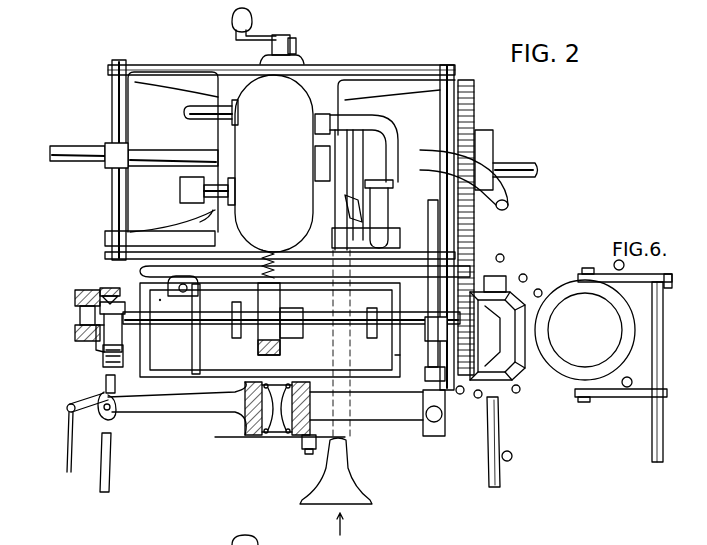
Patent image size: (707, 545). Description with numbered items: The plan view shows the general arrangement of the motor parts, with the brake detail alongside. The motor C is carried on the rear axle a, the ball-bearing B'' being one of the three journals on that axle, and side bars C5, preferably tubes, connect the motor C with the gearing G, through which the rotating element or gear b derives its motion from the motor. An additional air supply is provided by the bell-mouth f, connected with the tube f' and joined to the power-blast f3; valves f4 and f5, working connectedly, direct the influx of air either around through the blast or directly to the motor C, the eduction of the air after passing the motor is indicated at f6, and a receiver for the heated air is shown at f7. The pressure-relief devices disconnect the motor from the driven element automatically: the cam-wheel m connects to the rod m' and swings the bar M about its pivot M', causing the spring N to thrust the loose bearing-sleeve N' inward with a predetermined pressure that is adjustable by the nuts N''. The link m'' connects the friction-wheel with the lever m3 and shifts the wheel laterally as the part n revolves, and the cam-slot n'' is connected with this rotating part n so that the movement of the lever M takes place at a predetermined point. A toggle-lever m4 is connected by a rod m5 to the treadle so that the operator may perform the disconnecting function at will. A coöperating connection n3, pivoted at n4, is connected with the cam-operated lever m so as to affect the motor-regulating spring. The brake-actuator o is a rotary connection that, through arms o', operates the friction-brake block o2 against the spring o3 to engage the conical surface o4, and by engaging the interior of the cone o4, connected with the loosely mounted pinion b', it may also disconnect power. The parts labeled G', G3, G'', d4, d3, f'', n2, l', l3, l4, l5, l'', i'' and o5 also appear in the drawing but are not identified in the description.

In FIG. 2, the handle knob G' is at (254, 24).
In FIG. 2, the handle bracket G3 is at (273, 49).
In FIG. 2, the handle pivot G'' is at (305, 46).
In FIG. 2, the side bars C5 is at (127, 118).
In FIG. 2, the rod d4 is at (211, 118).
In FIG. 2, the ball-bearing journal B'' is at (134, 155).
In FIG. 2, the motor C is at (274, 163).
In FIG. 2, the air receiver f7 is at (207, 191).
In FIG. 2, the air eduction f6 is at (208, 211).
In FIG. 2, the pipe fitting f'' is at (322, 136).
In FIG. 2, the valve f4 is at (364, 174).
In FIG. 2, the power-blast f3 is at (378, 214).
In FIG. 2, the valve f5 is at (351, 210).
In FIG. 2, the tube f' is at (357, 237).
In FIG. 2, the curved tube d3 is at (508, 208).
In FIG. 2, the rotating element b is at (474, 227).
In FIG. 2, the axle a is at (515, 160).
In FIG. 2, the coöperating connection n3 is at (305, 266).
In FIG. 2, the spring n2 is at (196, 264).
In FIG. 2, the gearing G is at (270, 345).
In FIG. 2, the shaft l' is at (291, 317).
In FIG. 2, the collar l5 is at (272, 300).
In FIG. 2, the shaft end l'' is at (381, 352).
In FIG. 2, the bearing block l4 is at (436, 329).
In FIG. 2, the pivot n4 is at (184, 290).
In FIG. 2, the link m'' is at (138, 329).
In FIG. 2, the cam l3 is at (75, 298).
In FIG. 2, the rotating part n is at (110, 327).
In FIG. 2, the cam-slot n'' is at (119, 296).
In FIG. 2, the cam-wheel m is at (85, 284).
In FIG. 2, the lever m3 is at (103, 350).
In FIG. 2, the bar M is at (172, 408).
In FIG. 2, the spring N is at (273, 418).
In FIG. 2, the loose bearing-sleeve N' is at (266, 446).
In FIG. 2, the nuts N'' is at (265, 446).
In FIG. 2, the pivot M' is at (389, 413).
In FIG. 2, the toggle-lever m4 is at (87, 398).
In FIG. 2, the rod m5 is at (58, 442).
In FIG. 2, the rod m' is at (118, 432).
In FIG. 2, the bell-mouth f is at (336, 486).
In FIG. 2, the pinion b' is at (490, 420).
In FIG. 2, the brake-actuator o is at (508, 456).
In FIG. 6, the brake-actuator o is at (628, 382).
In FIG. 2, the housing i'' is at (497, 319).
In FIG. 2, the conical surface o4 is at (492, 323).
In FIG. 2, the friction-brake block o2 is at (523, 330).
In FIG. 2, the hole o5 is at (541, 289).
In FIG. 2, the spring o3 is at (463, 385).
In FIG. 6, the arms o' is at (603, 356).